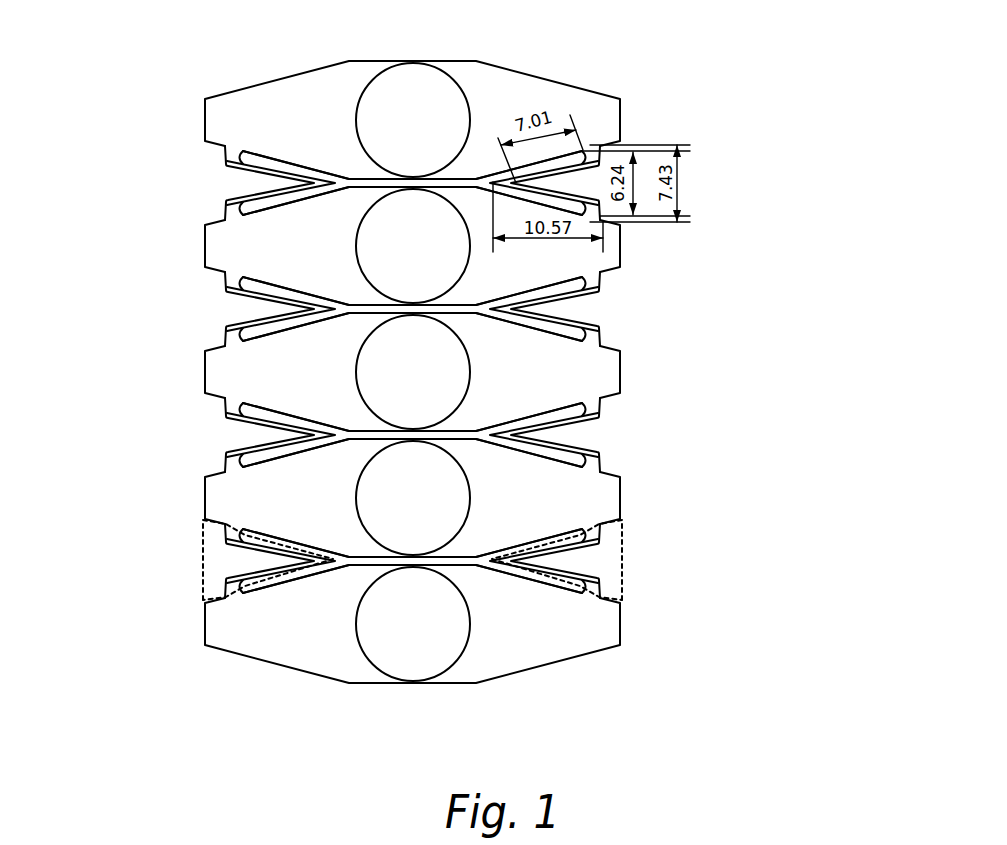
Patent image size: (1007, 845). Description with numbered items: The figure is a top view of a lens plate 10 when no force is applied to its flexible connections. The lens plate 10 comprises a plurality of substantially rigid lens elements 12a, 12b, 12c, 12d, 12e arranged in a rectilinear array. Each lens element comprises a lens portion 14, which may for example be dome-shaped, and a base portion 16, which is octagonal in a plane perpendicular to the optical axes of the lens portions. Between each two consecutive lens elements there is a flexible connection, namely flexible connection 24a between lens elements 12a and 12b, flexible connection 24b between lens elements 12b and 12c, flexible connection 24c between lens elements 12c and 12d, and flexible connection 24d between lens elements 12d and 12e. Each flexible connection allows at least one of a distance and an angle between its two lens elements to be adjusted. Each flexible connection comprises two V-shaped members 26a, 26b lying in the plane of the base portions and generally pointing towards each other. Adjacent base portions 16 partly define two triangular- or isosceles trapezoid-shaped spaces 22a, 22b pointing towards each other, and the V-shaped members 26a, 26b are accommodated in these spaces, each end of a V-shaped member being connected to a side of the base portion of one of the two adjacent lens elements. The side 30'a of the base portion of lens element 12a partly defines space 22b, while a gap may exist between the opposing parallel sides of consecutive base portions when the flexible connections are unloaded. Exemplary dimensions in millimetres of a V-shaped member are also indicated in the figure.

The lens plate 10 is at (648, 86).
The lens element 12a is at (199, 630).
The lens element 12b is at (201, 496).
The lens element 12c is at (201, 371).
The lens element 12d is at (201, 247).
The lens element 12e is at (201, 120).
The flexible connection 24a is at (201, 561).
The flexible connection 24b is at (201, 434).
The flexible connection 24c is at (200, 308).
The flexible connection 24d is at (202, 183).
The triangular- or isosceles trapezoid-shaped space 22a is at (617, 613).
The triangular- or isosceles trapezoid-shaped space 22b is at (156, 638).
The V-shaped member 26a is at (563, 646).
The V-shaped member 26b is at (235, 623).
The side 30'a is at (266, 670).
The base portion 16 is at (303, 627).
The lens portion 14 is at (420, 633).